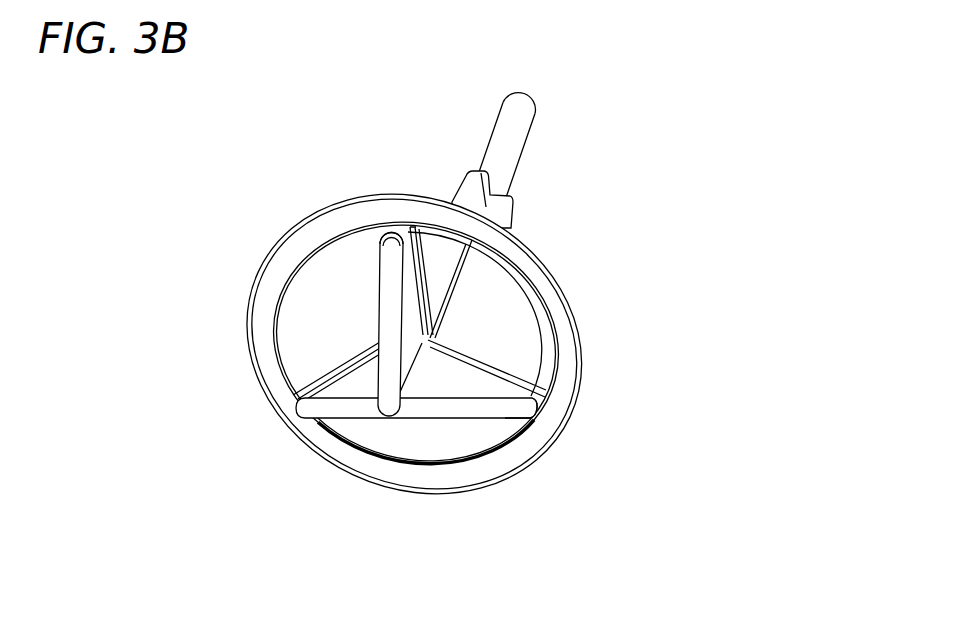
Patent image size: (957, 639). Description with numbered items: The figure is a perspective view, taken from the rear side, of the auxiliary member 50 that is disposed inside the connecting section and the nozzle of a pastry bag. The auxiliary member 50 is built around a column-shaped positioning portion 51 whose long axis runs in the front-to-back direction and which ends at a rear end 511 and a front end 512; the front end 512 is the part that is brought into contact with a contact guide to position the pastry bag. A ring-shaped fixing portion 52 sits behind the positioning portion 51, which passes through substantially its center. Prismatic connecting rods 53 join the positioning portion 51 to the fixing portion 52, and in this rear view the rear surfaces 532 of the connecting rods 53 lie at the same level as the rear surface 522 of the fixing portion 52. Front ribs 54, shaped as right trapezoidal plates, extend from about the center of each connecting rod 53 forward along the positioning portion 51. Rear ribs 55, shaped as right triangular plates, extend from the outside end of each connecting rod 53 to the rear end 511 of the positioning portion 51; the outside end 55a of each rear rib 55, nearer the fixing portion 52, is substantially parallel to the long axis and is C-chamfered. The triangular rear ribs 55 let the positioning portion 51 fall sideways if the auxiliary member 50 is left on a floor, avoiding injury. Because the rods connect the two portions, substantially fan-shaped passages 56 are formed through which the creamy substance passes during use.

The auxiliary member 50 is at (656, 153).
The positioning portion 51 is at (520, 128).
The rear end 511 is at (387, 412).
The front end 512 is at (532, 97).
The fixing portion 52 is at (555, 322).
The rear surface 522 is at (550, 313).
The connecting rods 53 is at (407, 232).
The rear surfaces 532 is at (538, 395).
The front ribs 54 is at (452, 252).
The rear ribs 55 is at (383, 312).
The outside end 55a is at (387, 228).
The passages 56 is at (326, 260).